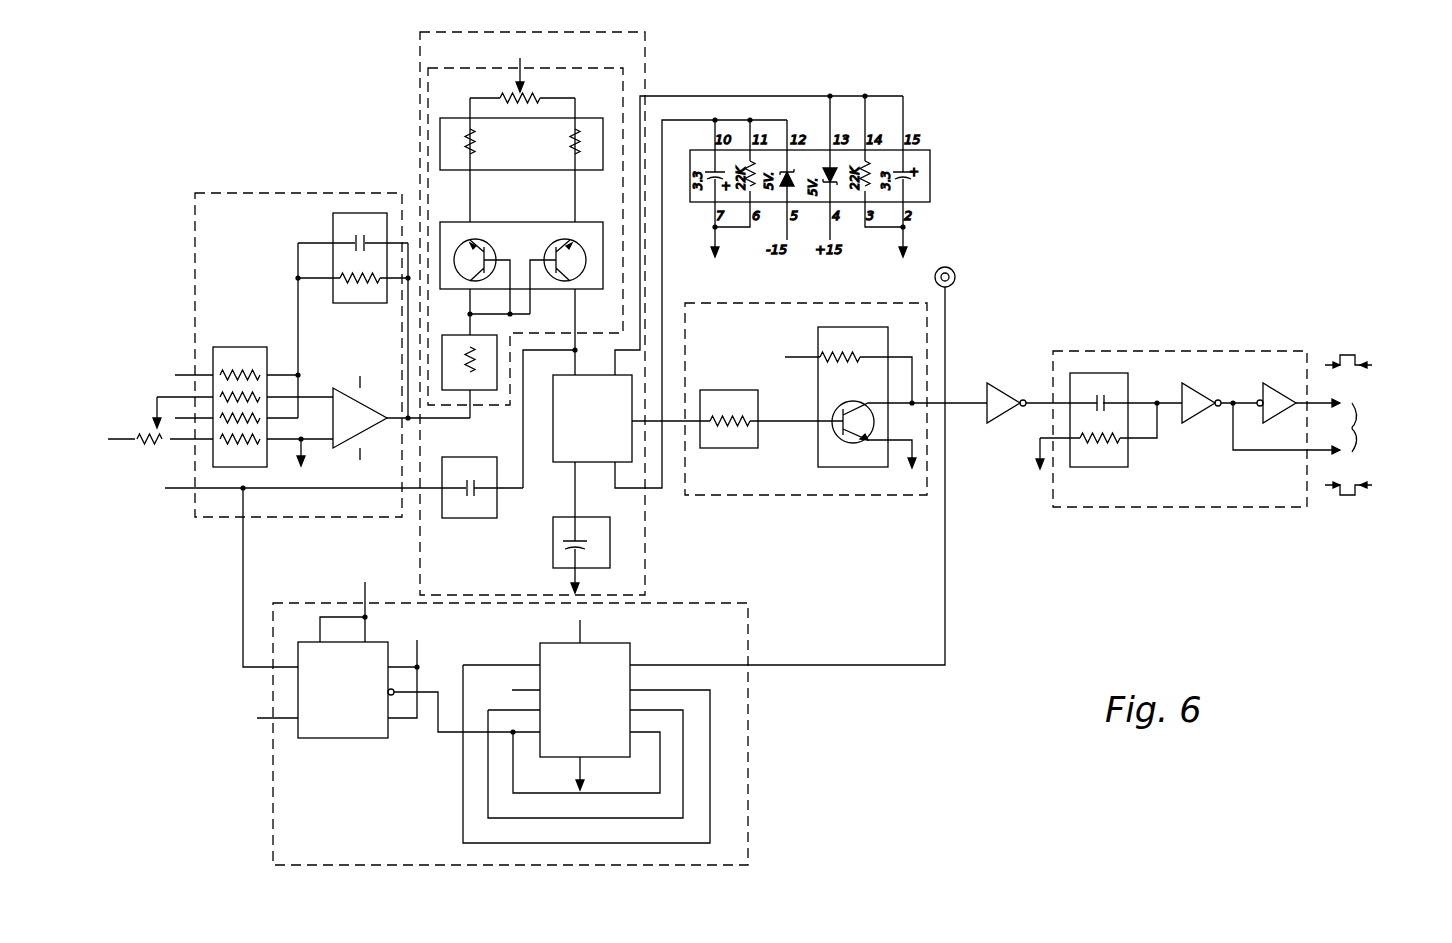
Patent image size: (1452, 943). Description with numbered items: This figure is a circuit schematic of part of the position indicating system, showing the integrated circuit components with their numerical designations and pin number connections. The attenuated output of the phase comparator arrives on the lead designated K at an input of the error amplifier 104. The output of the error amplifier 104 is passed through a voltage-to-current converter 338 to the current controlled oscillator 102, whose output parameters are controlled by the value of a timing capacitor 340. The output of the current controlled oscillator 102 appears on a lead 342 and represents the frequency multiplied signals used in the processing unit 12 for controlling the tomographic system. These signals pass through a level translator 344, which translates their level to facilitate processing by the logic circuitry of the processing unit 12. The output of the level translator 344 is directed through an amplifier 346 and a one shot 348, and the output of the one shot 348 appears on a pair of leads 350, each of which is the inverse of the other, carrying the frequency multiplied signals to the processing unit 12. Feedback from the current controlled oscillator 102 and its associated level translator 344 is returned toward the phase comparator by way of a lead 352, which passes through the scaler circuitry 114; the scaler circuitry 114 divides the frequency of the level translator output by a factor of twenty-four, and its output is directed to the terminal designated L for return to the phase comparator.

The processing unit 12 is at (1403, 436).
The current controlled oscillator 102 is at (645, 532).
The error amplifier 104 is at (318, 193).
The scaler circuitry 114 is at (748, 737).
The voltage-to-current converter 338 is at (623, 68).
The timing capacitor 340 is at (553, 549).
The lead 342 is at (655, 420).
The level translator 344 is at (847, 497).
The amplifier 346 is at (993, 425).
The one shot 348 is at (1160, 508).
The pair of leads 350 is at (1358, 410).
The lead 352 is at (884, 668).